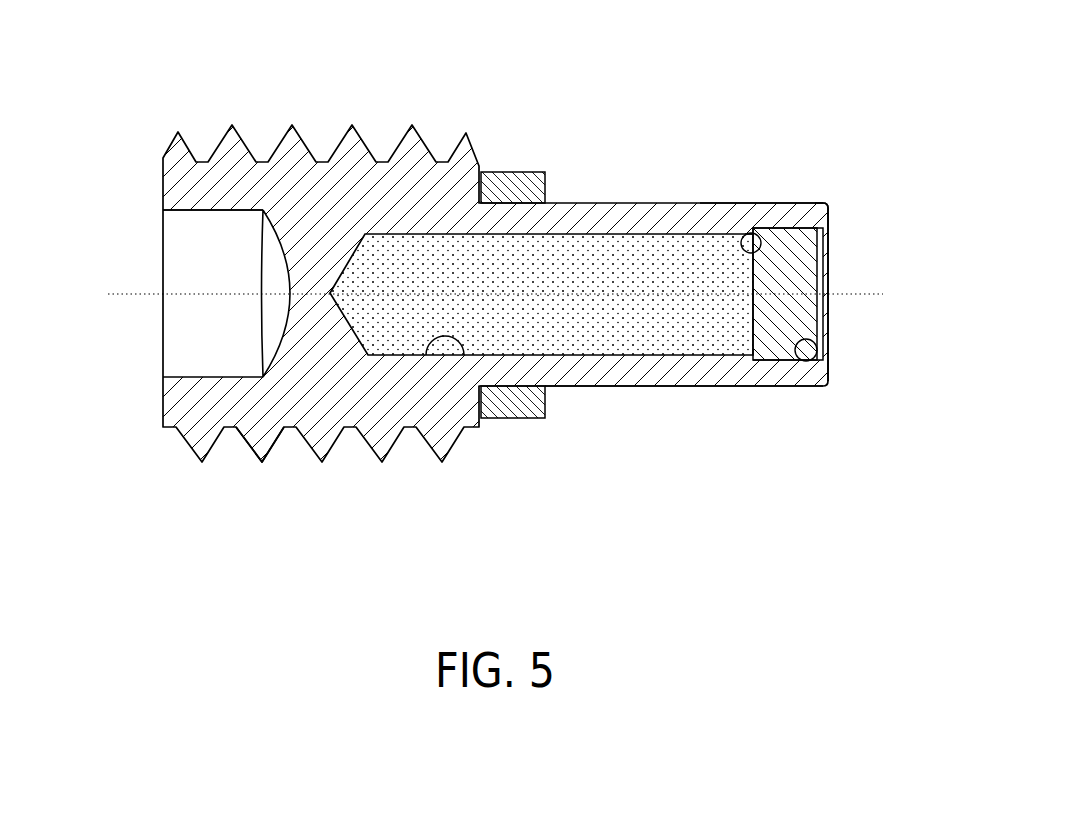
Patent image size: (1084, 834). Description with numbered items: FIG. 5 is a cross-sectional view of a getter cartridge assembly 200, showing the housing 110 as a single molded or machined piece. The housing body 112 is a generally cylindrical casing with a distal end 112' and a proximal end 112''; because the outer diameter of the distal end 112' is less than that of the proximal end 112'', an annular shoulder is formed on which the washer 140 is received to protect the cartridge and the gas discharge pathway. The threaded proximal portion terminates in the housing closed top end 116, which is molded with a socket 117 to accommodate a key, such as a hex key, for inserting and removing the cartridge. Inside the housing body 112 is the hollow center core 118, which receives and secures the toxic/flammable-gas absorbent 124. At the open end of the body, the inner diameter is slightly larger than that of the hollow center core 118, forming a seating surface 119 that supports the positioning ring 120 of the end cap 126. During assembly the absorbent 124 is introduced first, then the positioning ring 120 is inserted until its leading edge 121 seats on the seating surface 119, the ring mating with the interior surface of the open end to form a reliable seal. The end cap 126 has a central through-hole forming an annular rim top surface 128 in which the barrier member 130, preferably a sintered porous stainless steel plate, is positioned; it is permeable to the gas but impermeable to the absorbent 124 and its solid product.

The nozzle assembly 200 is at (689, 95).
The housing 110 is at (460, 127).
The housing body 112 is at (675, 404).
The distal end 112' is at (761, 164).
The proximal end 112'' is at (282, 463).
The housing closed top end 116 is at (194, 371).
The socket 117 is at (218, 210).
The hollow center core 118 is at (428, 352).
The seating surface 119 is at (742, 252).
The positioning ring 120 is at (780, 317).
The leading edge 121 is at (750, 283).
The toxic/flammable-gas absorbent 124 is at (622, 322).
The end cap 126 is at (840, 332).
The annular rim top surface 128 is at (830, 245).
The barrier member 130 is at (802, 364).
The washer 140 is at (522, 430).